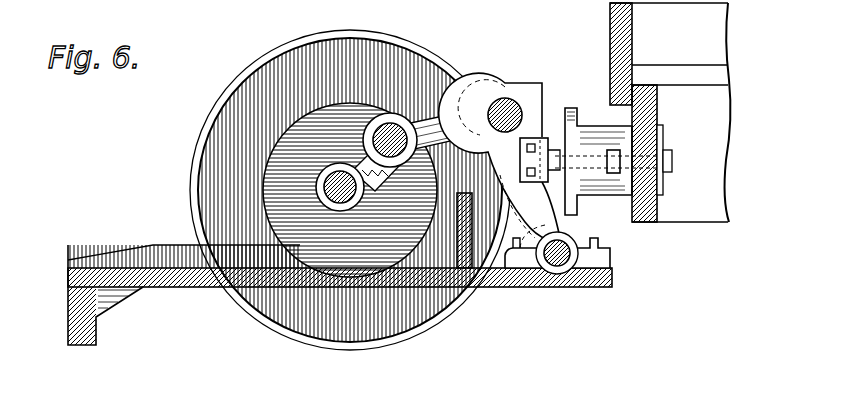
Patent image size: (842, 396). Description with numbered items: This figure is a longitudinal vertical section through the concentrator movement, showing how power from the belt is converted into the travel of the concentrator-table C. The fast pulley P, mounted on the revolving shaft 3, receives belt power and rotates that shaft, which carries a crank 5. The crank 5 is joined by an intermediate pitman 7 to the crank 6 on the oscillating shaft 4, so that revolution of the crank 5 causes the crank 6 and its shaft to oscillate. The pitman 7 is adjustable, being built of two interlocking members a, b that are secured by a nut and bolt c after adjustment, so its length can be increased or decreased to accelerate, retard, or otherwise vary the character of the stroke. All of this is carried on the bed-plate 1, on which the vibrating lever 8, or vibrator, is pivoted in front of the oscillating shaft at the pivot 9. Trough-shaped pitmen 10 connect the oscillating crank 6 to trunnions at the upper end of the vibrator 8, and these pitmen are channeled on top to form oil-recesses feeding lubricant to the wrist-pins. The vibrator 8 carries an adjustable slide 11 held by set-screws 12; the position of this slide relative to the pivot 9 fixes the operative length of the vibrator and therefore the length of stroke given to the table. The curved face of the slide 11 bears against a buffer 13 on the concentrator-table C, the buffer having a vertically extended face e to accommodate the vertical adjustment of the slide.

The bed-plate 1 is at (197, 286).
The revolving shaft 3 is at (328, 196).
The oscillating shaft 4 is at (404, 116).
The crank 5 is at (330, 180).
The crank 6 is at (393, 117).
The intermediate pitman 7 is at (345, 160).
The vibrating lever 8 is at (543, 107).
The pivot 9 is at (523, 288).
The pitmen 10 is at (440, 105).
The adjustable slide 11 is at (545, 168).
The set-screws 12 is at (527, 173).
The buffer 13 is at (597, 205).
The fast pulley P is at (197, 133).
The concentrator-table C is at (670, 112).
The vertically extended face e is at (576, 112).
The interlocking member a is at (365, 219).
The interlocking member b is at (402, 188).
The nut and bolt c is at (495, 212).